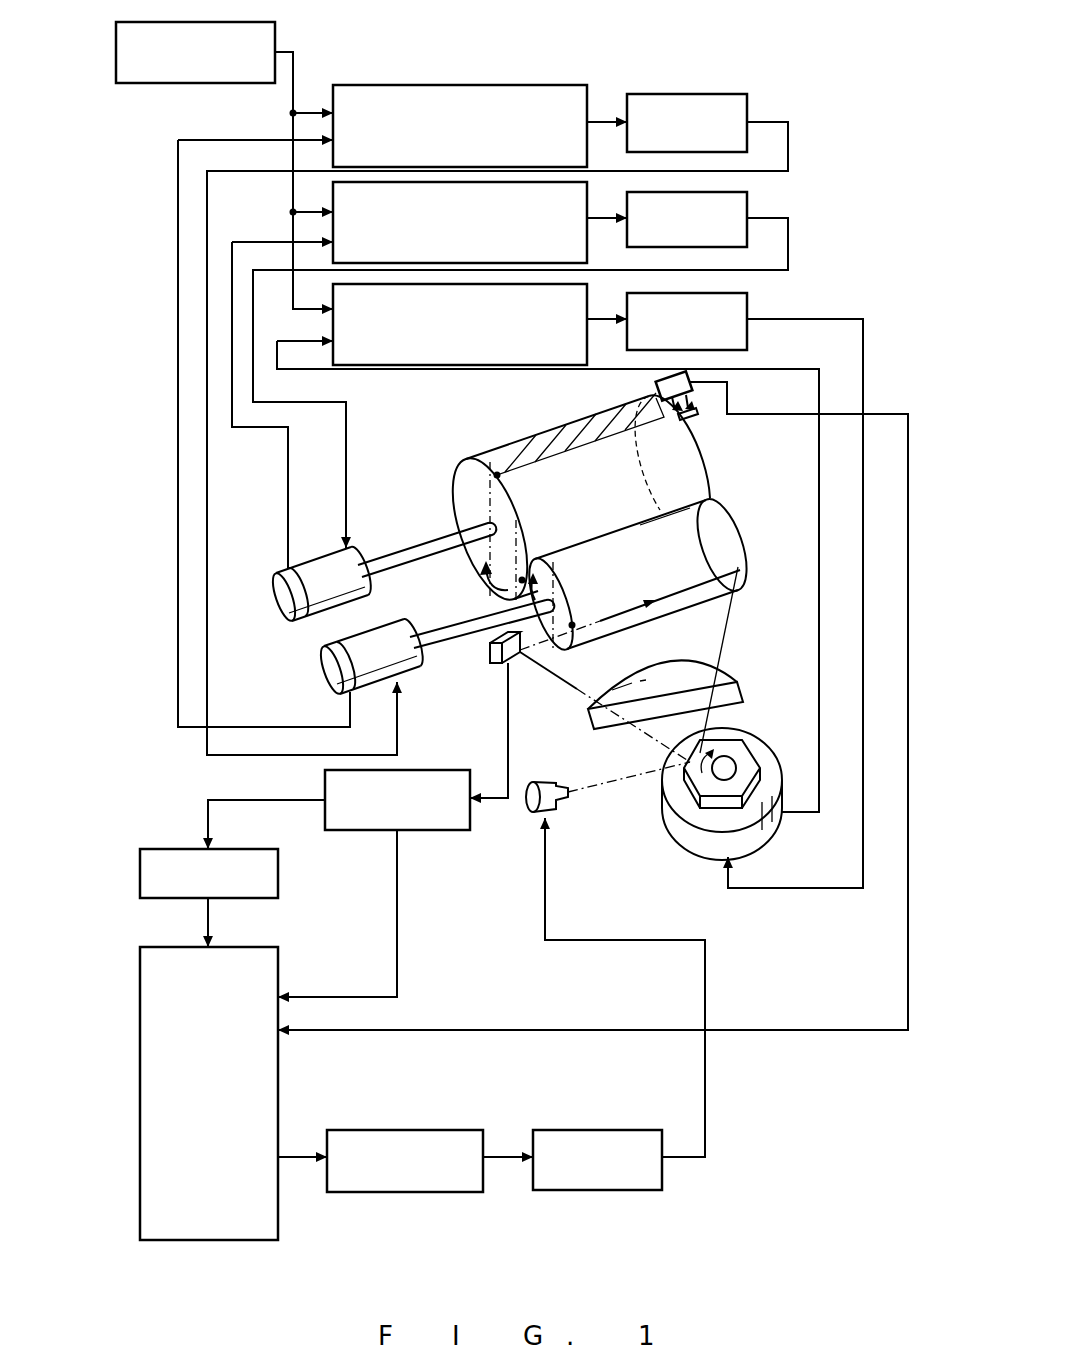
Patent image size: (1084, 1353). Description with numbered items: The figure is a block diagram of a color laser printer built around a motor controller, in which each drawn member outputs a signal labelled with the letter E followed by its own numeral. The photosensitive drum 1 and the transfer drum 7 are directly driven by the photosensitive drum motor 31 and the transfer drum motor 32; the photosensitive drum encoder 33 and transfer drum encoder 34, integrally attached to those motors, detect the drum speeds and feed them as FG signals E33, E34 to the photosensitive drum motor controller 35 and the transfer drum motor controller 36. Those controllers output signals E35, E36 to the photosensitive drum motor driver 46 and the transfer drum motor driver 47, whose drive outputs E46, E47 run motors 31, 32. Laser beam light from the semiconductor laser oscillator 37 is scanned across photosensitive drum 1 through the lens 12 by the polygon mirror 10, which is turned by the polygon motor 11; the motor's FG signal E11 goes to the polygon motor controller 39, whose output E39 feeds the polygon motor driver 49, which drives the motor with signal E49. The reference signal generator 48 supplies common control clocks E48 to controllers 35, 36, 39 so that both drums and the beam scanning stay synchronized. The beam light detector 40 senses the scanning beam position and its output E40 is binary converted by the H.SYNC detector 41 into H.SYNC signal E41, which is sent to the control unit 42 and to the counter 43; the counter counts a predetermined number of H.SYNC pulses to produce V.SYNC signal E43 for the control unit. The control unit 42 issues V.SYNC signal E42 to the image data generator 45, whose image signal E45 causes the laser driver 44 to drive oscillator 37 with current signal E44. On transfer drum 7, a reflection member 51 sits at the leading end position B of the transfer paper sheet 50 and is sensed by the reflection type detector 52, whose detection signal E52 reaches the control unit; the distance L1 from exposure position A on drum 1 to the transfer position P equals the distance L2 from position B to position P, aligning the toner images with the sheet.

The photosensitive drum 1 is at (738, 553).
The transfer drum 7 is at (693, 487).
The polygon mirror 10 is at (748, 756).
The polygon motor 11 is at (705, 843).
The lens 12 is at (730, 690).
The photosensitive drum motor 31 is at (387, 650).
The transfer drum motor 32 is at (330, 565).
The photosensitive drum encoder 33 is at (342, 660).
The transfer drum encoder 34 is at (283, 576).
The photosensitive drum motor controller 35 is at (510, 86).
The transfer drum motor controller 36 is at (590, 216).
The semiconductor laser oscillator 37 is at (530, 818).
The polygon motor controller 39 is at (590, 318).
The beam light detector 40 is at (488, 655).
The horizontal sync (H.SYNC) detector 41 is at (452, 832).
The control unit (CPU) 42 is at (280, 1105).
The counter 43 is at (140, 886).
The laser driver 44 is at (575, 1130).
The image data generator 45 is at (445, 1130).
The photosensitive drum motor driver 46 is at (698, 94).
The transfer drum motor driver 47 is at (748, 205).
The reference signal generator 48 is at (162, 86).
The polygon motor driver 49 is at (748, 307).
The transfer paper sheet 50 is at (545, 445).
The reflection member 51 is at (697, 420).
The reflection type detector 52 is at (658, 386).
The exposure position A is at (574, 628).
The leading end position B is at (495, 472).
The transfer position P is at (523, 578).
The distance from exposure position to transfer position L1 is at (567, 597).
The distance from leading end position to transfer position L2 is at (517, 497).
The FG signal E11 is at (395, 372).
The FG signal from photosensitive drum encoder E33 is at (177, 242).
The FG signal from transfer drum encoder E34 is at (287, 462).
The output signal of photosensitive drum motor controller E35 is at (598, 116).
The output signal of transfer drum motor controller E36 is at (592, 222).
The output signal of polygon motor controller E39 is at (592, 322).
The output of beam light detector E40 is at (508, 775).
The H.SYNC signal E41 is at (318, 800).
The V.SYNC signal E42 is at (297, 1160).
The vertical sync (V.SYNC) signal E43 is at (209, 920).
The current signal E44 is at (708, 1100).
The image signal E45 is at (500, 1160).
The output signal of photosensitive drum motor driver E46 is at (400, 725).
The output signal of transfer drum motor driver E47 is at (348, 500).
The common control clocks E48 is at (283, 51).
The output signal of polygon motor driver E49 is at (768, 888).
The output signal of reflection type detector E52 is at (560, 1030).